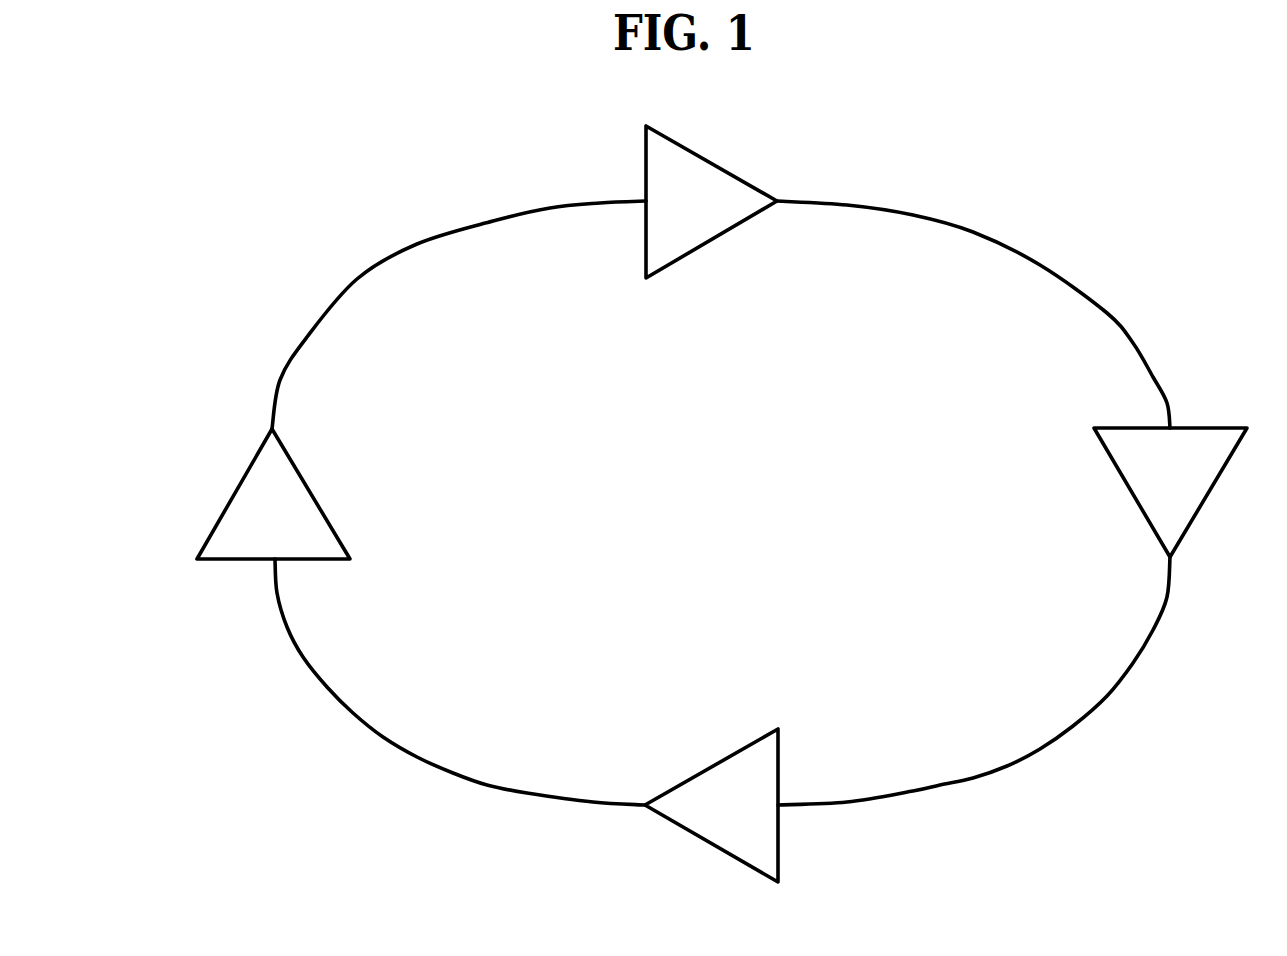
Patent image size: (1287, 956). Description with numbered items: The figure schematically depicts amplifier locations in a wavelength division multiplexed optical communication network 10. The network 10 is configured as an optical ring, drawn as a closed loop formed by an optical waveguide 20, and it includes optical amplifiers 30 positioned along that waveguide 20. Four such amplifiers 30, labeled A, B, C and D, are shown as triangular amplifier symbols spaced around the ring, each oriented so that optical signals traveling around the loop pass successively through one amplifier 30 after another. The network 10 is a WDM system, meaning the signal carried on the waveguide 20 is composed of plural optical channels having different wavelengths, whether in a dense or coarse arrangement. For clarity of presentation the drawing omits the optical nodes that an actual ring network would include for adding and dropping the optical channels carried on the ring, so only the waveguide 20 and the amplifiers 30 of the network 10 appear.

The wavelength division multiplexed optical communication network 10 is at (686, 504).
The optical waveguide 20 is at (490, 222).
The optical amplifiers 30 is at (1209, 496).